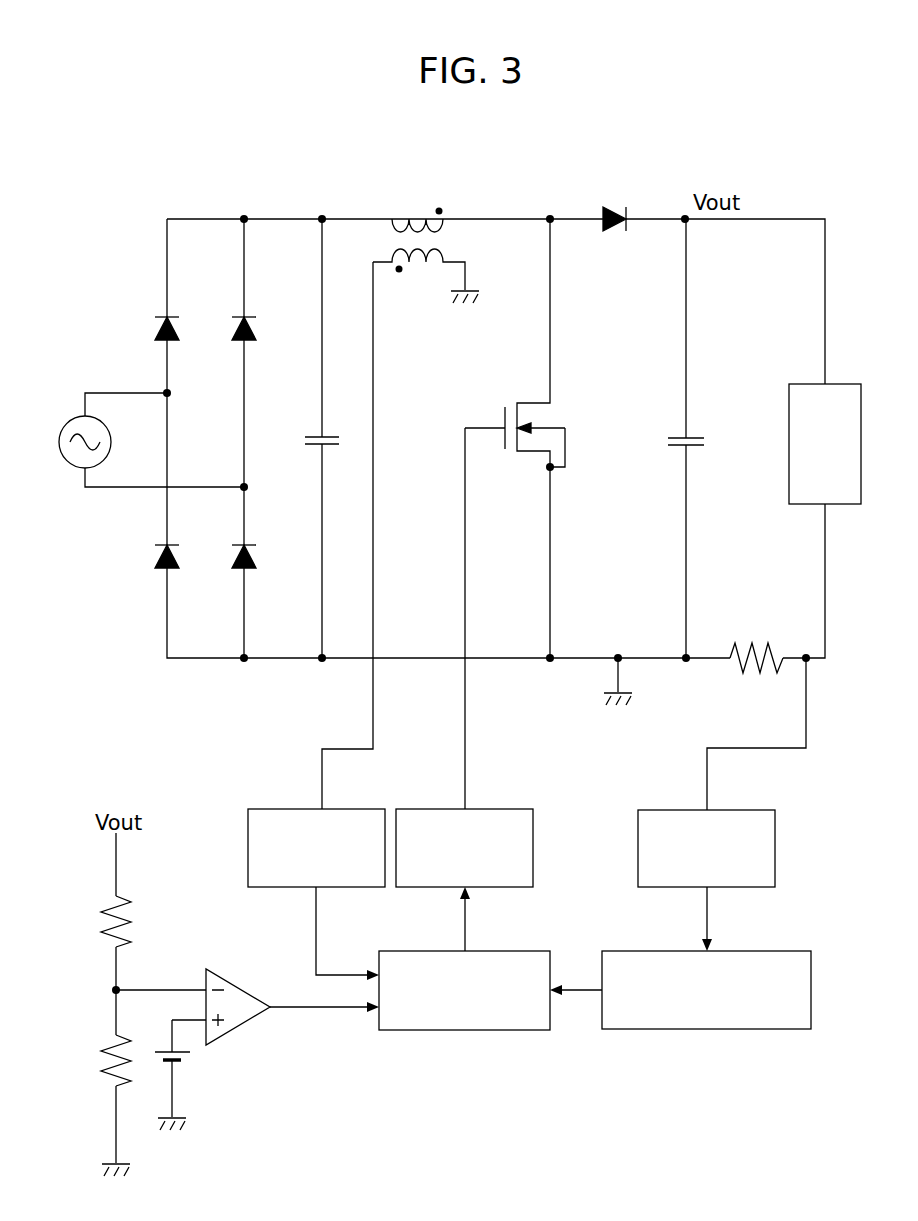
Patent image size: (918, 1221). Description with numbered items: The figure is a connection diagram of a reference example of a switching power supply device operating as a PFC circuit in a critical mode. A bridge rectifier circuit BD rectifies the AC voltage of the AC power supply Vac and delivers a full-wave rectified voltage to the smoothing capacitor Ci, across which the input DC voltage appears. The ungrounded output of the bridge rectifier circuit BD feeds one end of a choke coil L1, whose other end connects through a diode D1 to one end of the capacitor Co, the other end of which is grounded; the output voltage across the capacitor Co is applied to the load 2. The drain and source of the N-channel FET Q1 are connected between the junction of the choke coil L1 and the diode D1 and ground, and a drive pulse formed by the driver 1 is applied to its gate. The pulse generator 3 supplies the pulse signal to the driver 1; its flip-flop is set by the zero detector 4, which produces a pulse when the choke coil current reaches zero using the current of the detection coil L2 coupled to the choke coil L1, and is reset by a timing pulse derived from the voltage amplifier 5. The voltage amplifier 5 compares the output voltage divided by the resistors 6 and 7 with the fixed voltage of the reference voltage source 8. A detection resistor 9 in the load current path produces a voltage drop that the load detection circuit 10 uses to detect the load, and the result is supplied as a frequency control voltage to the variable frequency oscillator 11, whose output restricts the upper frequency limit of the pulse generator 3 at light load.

The driver 1 is at (487, 809).
The load 2 is at (803, 384).
The pulse generator 3 is at (500, 951).
The zero detector 4 is at (340, 809).
The voltage amplifier 5 is at (232, 975).
The resistor 6 is at (100, 908).
The resistor 7 is at (100, 1045).
The reference voltage source 8 is at (185, 1058).
The detection resistor 9 is at (755, 643).
The load detection circuit 10 is at (732, 810).
The variable frequency oscillator 11 is at (742, 951).
The bridge rectifier circuit BD is at (205, 238).
The AC power supply Vac is at (74, 415).
The smoothing capacitor Ci is at (308, 436).
The capacitor Co is at (672, 436).
The choke coil L1 is at (410, 210).
The detection coil L2 is at (410, 272).
The FET Q1 is at (512, 404).
The diode D1 is at (607, 210).